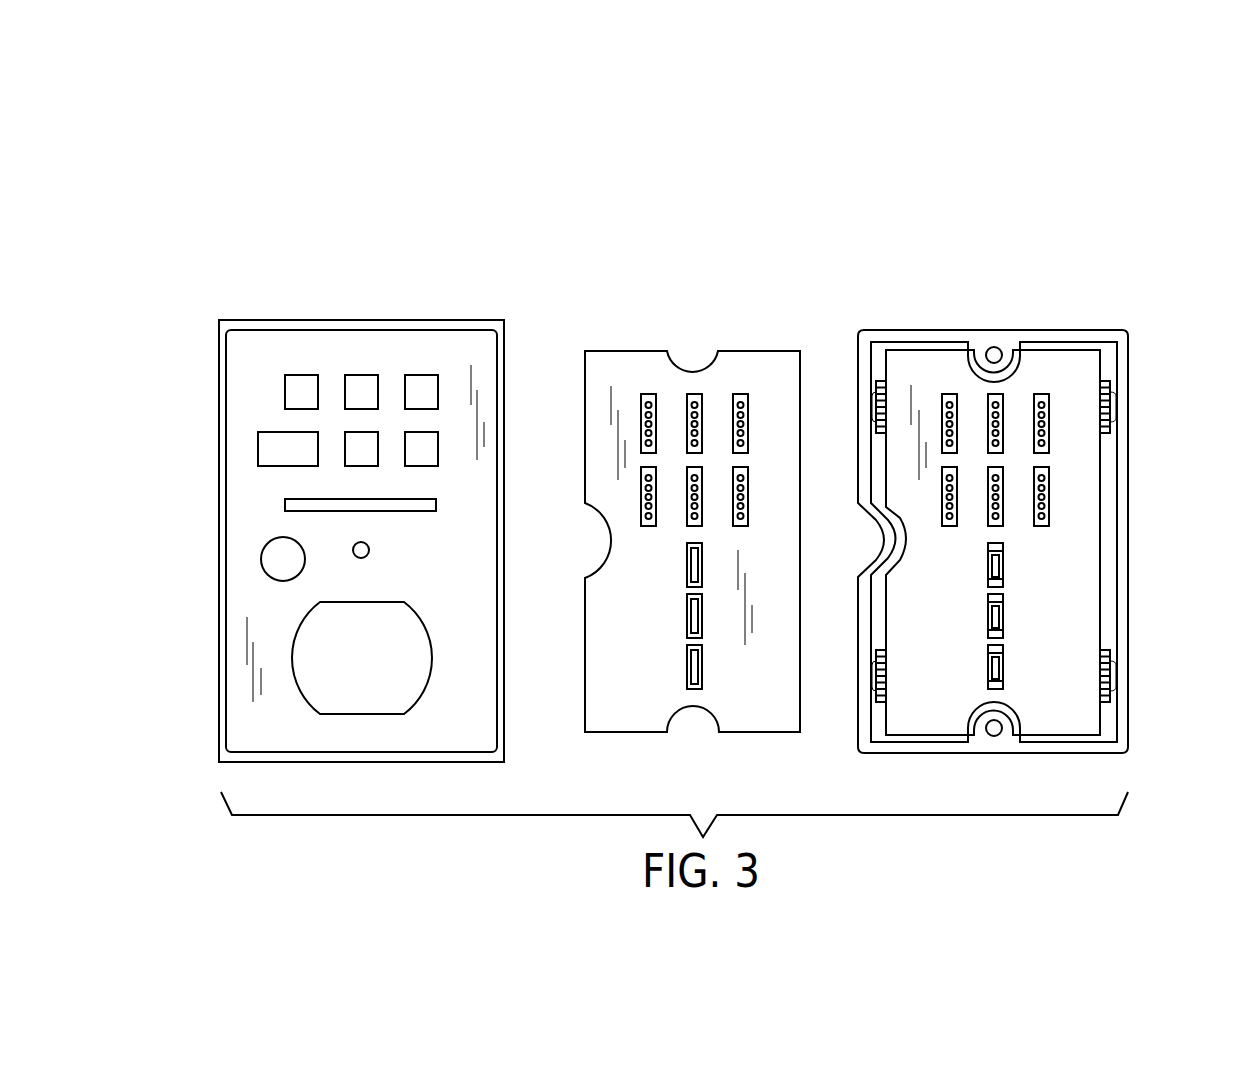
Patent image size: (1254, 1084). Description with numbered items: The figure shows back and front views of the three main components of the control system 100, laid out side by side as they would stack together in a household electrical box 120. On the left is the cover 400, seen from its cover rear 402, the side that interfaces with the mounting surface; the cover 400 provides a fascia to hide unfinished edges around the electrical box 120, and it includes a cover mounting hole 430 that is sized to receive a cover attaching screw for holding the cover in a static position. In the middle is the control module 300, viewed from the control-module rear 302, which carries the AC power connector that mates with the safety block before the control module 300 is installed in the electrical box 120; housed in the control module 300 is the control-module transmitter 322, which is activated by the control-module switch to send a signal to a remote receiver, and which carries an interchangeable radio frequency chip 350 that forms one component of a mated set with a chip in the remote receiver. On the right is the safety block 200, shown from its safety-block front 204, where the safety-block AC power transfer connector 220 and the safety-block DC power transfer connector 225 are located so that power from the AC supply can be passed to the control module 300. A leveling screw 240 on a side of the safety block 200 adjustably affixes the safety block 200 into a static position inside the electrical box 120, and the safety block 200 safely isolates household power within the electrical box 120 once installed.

The control system 100 is at (990, 116).
The electrical box 120 is at (1129, 725).
The safety block 200 is at (943, 368).
The safety-block front 204 is at (1037, 362).
The safety-block alternating current (AC) power transfer connector 220 is at (1003, 618).
The safety-block direct current (DC) power transfer connector 225 is at (1003, 665).
The leveling screw 240 is at (1112, 408).
The control module 300 is at (638, 351).
The control-module rear 302 is at (770, 382).
The control-module transmitter 322 is at (692, 398).
The radio frequency chip 350 is at (1045, 395).
The cover 400 is at (321, 324).
The cover rear 402 is at (243, 586).
The cover mounting hole 430 is at (355, 546).